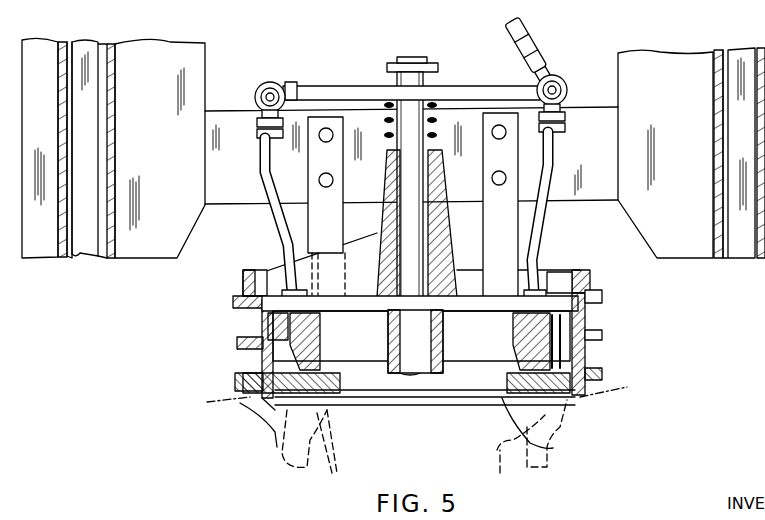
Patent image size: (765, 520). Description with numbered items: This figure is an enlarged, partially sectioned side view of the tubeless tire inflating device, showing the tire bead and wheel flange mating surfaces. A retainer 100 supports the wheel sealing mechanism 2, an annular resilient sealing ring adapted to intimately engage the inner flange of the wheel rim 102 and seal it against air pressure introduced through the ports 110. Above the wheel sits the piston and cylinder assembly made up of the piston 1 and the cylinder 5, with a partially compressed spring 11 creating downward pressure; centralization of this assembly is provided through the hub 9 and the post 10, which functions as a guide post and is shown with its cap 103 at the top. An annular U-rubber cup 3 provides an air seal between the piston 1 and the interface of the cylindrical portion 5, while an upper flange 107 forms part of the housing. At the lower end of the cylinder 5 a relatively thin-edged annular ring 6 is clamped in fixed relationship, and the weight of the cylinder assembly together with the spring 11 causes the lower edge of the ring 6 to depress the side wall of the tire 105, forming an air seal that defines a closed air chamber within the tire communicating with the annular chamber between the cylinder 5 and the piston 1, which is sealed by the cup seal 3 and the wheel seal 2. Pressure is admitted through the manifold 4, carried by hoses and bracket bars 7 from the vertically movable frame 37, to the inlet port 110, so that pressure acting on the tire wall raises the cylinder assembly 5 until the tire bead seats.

The piston 1 is at (248, 368).
The wheel sealing mechanism 2 is at (275, 410).
The U-rubber cup 3 is at (247, 337).
The manifold 4 is at (258, 112).
The cylinder 5 is at (597, 337).
The sealing ring 6 is at (470, 272).
The bracket bar 7 is at (532, 174).
The hub 9 is at (445, 337).
The post 10 is at (437, 98).
The spring 11 is at (393, 88).
The frame 37 is at (223, 112).
The retainer 100 is at (553, 448).
The wheel rim 102 is at (302, 417).
The spindle cap 103 is at (417, 57).
The tire 105 is at (273, 432).
The upper flange 107 is at (262, 318).
The inlet port 110 is at (580, 355).